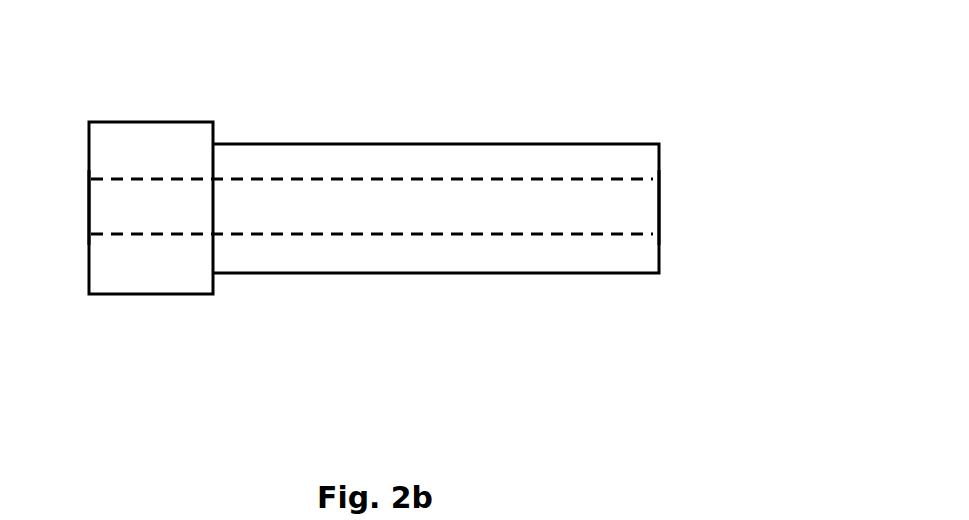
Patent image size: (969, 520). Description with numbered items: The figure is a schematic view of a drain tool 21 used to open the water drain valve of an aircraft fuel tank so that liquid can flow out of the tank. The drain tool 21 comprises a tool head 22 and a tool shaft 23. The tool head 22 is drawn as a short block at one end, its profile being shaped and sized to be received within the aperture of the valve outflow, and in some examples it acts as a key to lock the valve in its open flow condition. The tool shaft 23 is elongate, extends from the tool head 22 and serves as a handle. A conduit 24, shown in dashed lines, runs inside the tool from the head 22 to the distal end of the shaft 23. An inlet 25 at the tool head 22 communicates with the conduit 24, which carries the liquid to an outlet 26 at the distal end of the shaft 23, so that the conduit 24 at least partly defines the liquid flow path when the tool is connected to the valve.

The drain tool 21 is at (562, 83).
The tool head 22 is at (163, 295).
The tool shaft 23 is at (418, 274).
The conduit 24 is at (357, 200).
The inlet 25 is at (87, 198).
The outlet 26 is at (658, 209).